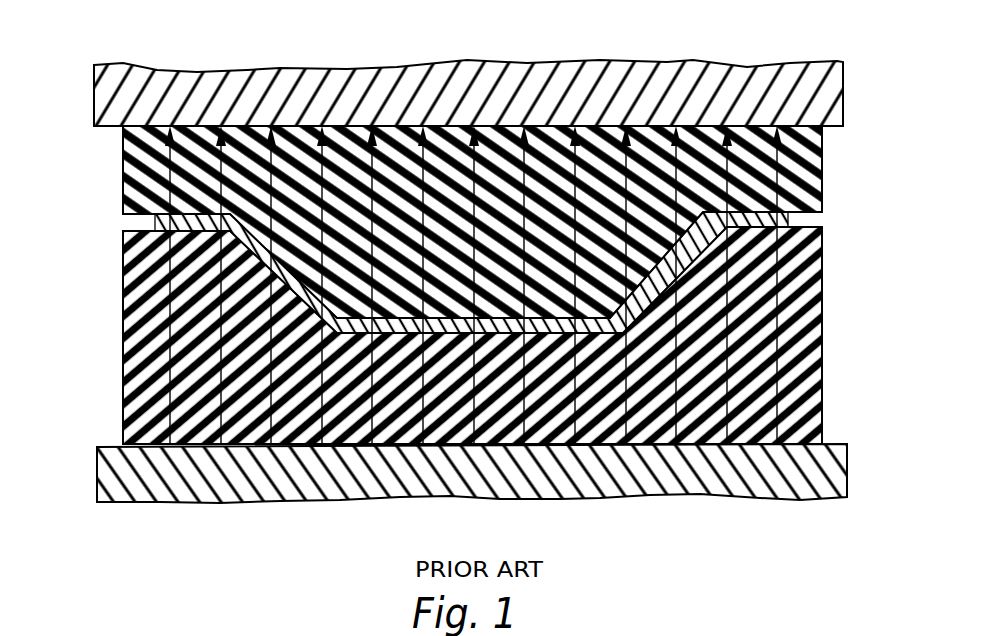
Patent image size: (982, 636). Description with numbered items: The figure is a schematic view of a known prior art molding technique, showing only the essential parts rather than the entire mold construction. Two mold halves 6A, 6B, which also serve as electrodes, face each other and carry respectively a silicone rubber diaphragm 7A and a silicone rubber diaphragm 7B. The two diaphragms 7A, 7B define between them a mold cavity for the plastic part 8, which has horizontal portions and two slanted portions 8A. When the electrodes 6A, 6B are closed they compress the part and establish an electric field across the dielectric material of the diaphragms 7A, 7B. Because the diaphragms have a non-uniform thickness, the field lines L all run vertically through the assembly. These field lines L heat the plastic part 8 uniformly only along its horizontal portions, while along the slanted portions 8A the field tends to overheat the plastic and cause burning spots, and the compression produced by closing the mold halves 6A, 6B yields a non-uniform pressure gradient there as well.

The mold half 6A is at (764, 80).
The mold half 6B is at (838, 467).
The silicone rubber diaphragm 7A is at (823, 170).
The silicone rubber diaphragm 7B is at (823, 287).
The plastic part 8 is at (800, 217).
The slanted portions 8A is at (222, 309).
The field lines L is at (778, 327).